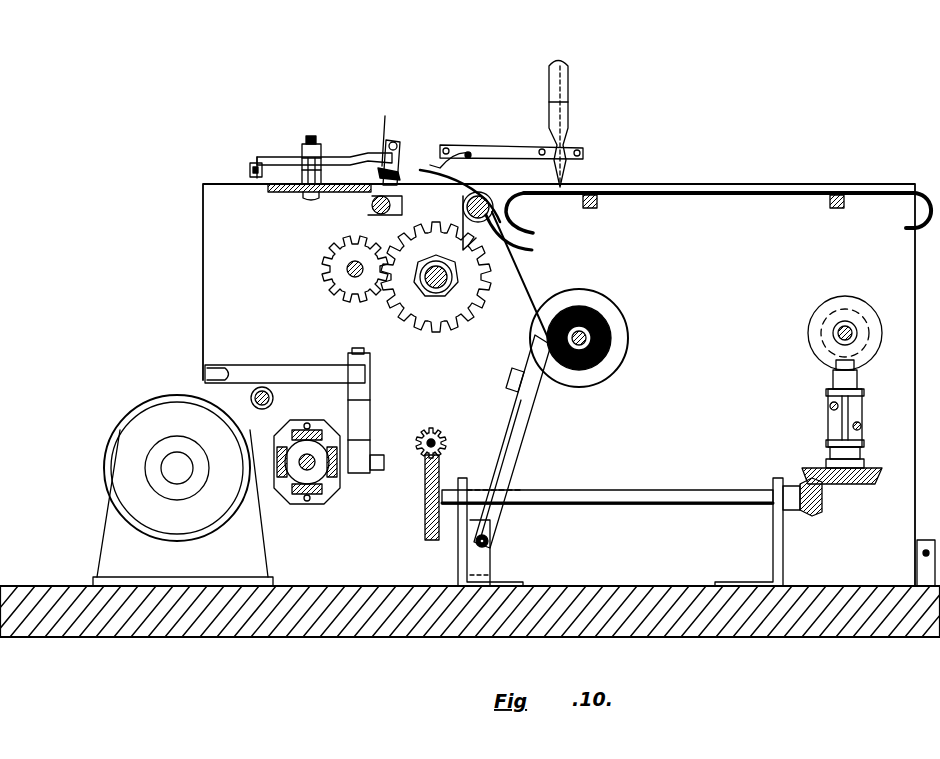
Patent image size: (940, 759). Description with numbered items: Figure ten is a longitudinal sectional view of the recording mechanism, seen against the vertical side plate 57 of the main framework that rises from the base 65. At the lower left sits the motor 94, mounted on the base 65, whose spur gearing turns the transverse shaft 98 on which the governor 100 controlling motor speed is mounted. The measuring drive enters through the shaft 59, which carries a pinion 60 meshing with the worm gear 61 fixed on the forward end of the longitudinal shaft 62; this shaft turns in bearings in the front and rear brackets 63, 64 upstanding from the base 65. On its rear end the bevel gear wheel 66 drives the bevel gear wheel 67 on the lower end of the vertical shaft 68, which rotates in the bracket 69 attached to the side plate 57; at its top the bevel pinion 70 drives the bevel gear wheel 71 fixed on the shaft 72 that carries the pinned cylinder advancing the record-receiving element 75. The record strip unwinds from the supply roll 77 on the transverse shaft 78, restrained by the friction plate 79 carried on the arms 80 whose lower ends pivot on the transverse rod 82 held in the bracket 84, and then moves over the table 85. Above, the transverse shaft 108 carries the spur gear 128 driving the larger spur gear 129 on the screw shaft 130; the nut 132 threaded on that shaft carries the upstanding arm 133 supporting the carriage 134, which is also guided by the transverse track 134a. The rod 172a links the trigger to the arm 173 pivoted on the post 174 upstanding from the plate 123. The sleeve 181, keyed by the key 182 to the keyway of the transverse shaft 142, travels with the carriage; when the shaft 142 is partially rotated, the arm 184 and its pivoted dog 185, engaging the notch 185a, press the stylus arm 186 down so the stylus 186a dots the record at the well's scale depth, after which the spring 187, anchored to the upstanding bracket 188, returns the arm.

The vertical side plate 57 is at (206, 298).
The shaft 59 is at (433, 430).
The pinion 60 is at (450, 442).
The worm gear 61 is at (426, 528).
The longitudinal shaft 62 is at (690, 488).
The front bracket 63 is at (458, 553).
The rear bracket 64 is at (773, 546).
The base 65 is at (636, 586).
The bevel gear wheel 66 is at (808, 512).
The bevel gear wheel 67 is at (868, 468).
The vertical shaft 68 is at (850, 414).
The bracket 69 is at (828, 424).
The bevel pinion 70 is at (832, 375).
The bevel gear wheel 71 is at (868, 306).
The shaft 72 is at (836, 330).
The record-receiving element 75 is at (534, 278).
The supply roll 77 is at (608, 346).
The transverse shaft 78 is at (602, 316).
The friction plate 79 is at (532, 388).
The arm 80 is at (512, 456).
The transverse rod 82 is at (492, 538).
The bracket 84 is at (492, 560).
The table 85 is at (732, 196).
The motor 94 is at (175, 408).
The transverse shaft 98 is at (304, 500).
The governor 100 is at (345, 485).
The transverse shaft 108 is at (355, 262).
The plate or platform 123 is at (285, 193).
The spur gear 128 is at (338, 294).
The spur gear 129 is at (412, 312).
The screw shaft 130 is at (424, 282).
The nut 132 is at (443, 292).
The upstanding arm 133 is at (484, 282).
The carriage 134 is at (450, 194).
The transverse track 134a is at (372, 205).
The transverse shaft 142 is at (478, 240).
The rod 172a is at (246, 166).
The arm 173 is at (332, 154).
The post 174 is at (311, 134).
The sleeve 181 is at (526, 250).
The key 182 is at (512, 212).
The arm 184 is at (495, 181).
The pivoted dog 185 is at (430, 168).
The notch or recess 185a is at (428, 164).
The stylus arm 186 is at (524, 142).
The stylus 186a is at (578, 130).
The spring 187 is at (390, 130).
The upstanding bracket 188 is at (400, 142).